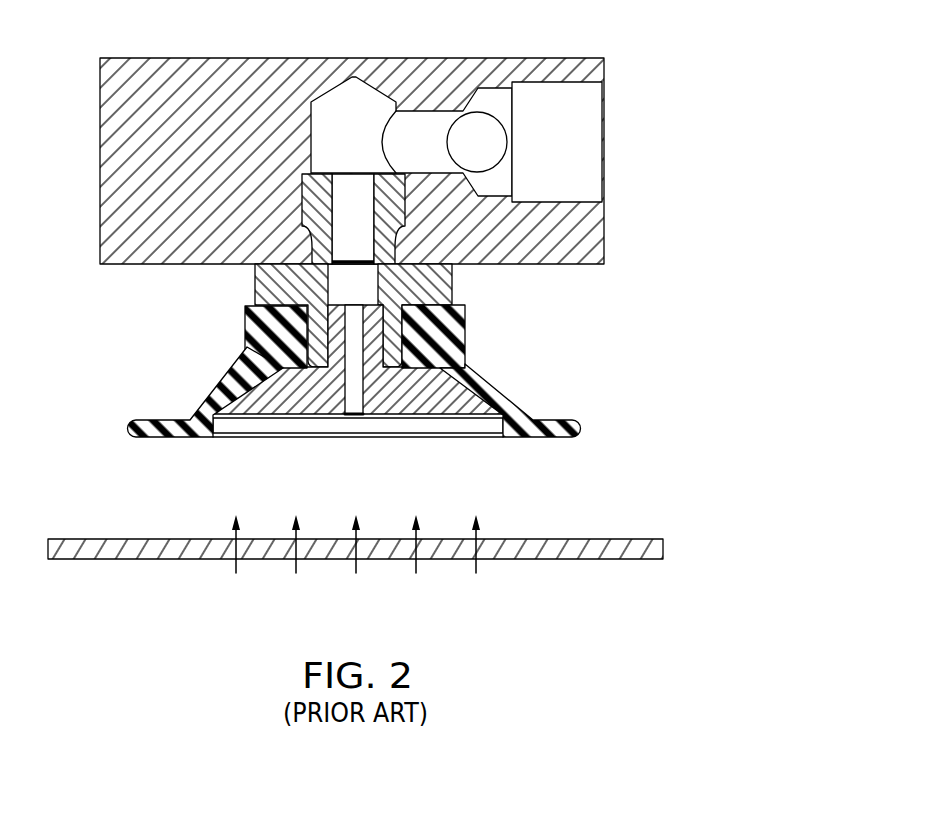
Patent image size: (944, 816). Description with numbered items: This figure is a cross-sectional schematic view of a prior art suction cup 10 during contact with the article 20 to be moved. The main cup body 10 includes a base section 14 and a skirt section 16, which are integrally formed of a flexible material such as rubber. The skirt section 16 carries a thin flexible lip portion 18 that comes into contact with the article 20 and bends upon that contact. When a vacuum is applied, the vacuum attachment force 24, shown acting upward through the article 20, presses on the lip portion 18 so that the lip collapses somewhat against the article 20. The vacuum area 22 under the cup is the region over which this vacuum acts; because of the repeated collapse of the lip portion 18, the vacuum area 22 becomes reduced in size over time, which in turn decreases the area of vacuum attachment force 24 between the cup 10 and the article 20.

The main cup body 10 is at (535, 303).
The base section 14 is at (255, 338).
The skirt section 16 is at (203, 400).
The lip portion 18 is at (557, 418).
The article 20 is at (648, 548).
The vacuum area 22 is at (527, 445).
The vacuum attachment force 24 is at (487, 574).